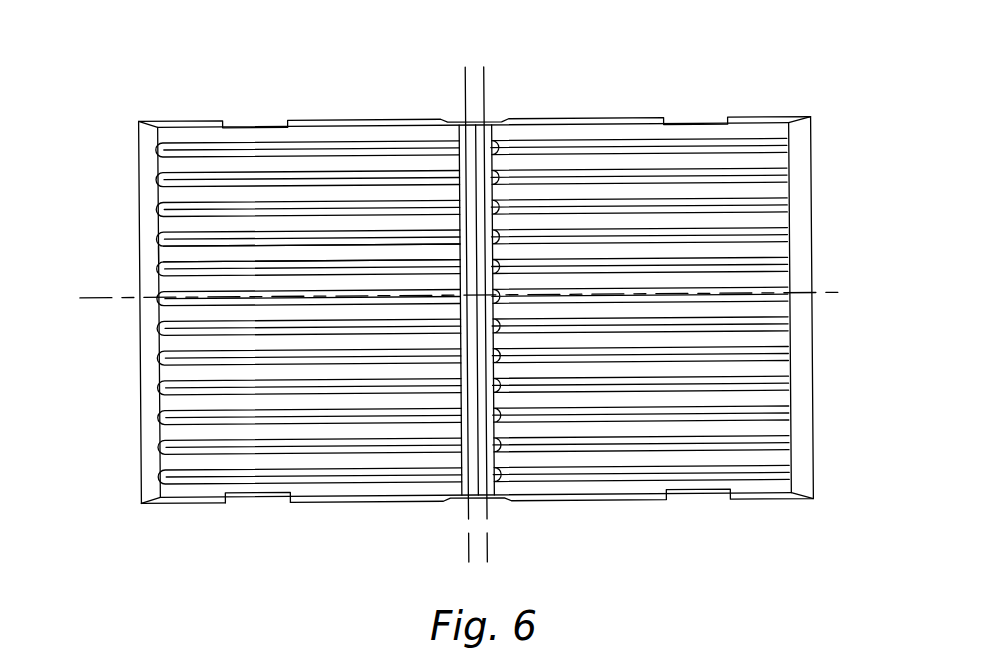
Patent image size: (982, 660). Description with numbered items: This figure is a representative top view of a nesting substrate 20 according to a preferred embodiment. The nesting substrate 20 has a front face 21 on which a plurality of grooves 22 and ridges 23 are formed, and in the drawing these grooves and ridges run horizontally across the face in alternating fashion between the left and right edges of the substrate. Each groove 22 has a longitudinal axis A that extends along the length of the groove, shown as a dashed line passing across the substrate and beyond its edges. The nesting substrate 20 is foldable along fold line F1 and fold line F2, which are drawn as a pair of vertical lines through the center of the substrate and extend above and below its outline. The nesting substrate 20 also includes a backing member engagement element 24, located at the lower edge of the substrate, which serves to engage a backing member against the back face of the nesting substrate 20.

The nesting substrate 20 is at (111, 62).
The front face 21 is at (370, 130).
The groove 22 is at (160, 150).
The ridge 23 is at (168, 252).
The backing member engagement element 24 is at (247, 495).
The fold line F1 is at (463, 93).
The fold line F2 is at (484, 92).
The longitudinal axis A is at (845, 292).